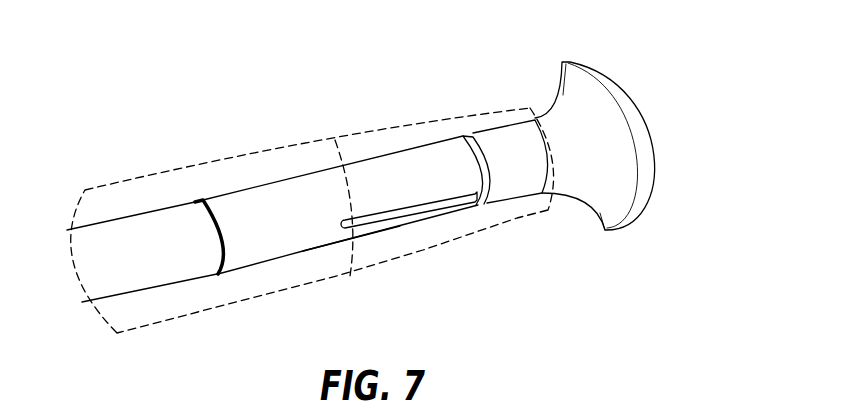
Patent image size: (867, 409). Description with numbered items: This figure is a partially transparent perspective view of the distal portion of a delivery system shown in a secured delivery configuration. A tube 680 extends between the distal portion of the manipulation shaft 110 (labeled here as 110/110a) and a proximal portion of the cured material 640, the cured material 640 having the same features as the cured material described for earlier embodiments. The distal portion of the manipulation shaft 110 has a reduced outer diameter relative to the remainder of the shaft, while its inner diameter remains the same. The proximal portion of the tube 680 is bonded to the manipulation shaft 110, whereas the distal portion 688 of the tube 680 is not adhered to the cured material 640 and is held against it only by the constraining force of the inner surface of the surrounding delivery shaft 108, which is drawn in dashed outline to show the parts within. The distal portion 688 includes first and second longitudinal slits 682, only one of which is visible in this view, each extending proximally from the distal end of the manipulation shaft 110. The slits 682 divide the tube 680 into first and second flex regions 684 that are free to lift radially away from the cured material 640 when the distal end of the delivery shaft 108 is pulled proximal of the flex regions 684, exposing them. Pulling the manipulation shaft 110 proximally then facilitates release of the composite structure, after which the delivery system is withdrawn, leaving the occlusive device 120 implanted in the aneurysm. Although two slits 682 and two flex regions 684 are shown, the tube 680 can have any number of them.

The delivery shaft 108 is at (125, 184).
The manipulation shaft 110 is at (142, 289).
The shaft portion 110a is at (132, 278).
The occlusive device 120 is at (624, 44).
The cured material 640 is at (513, 158).
The tube 680 is at (228, 222).
The longitudinal slits 682 is at (433, 201).
The flex regions 684 is at (362, 232).
The distal portion of the tube 688 is at (405, 173).